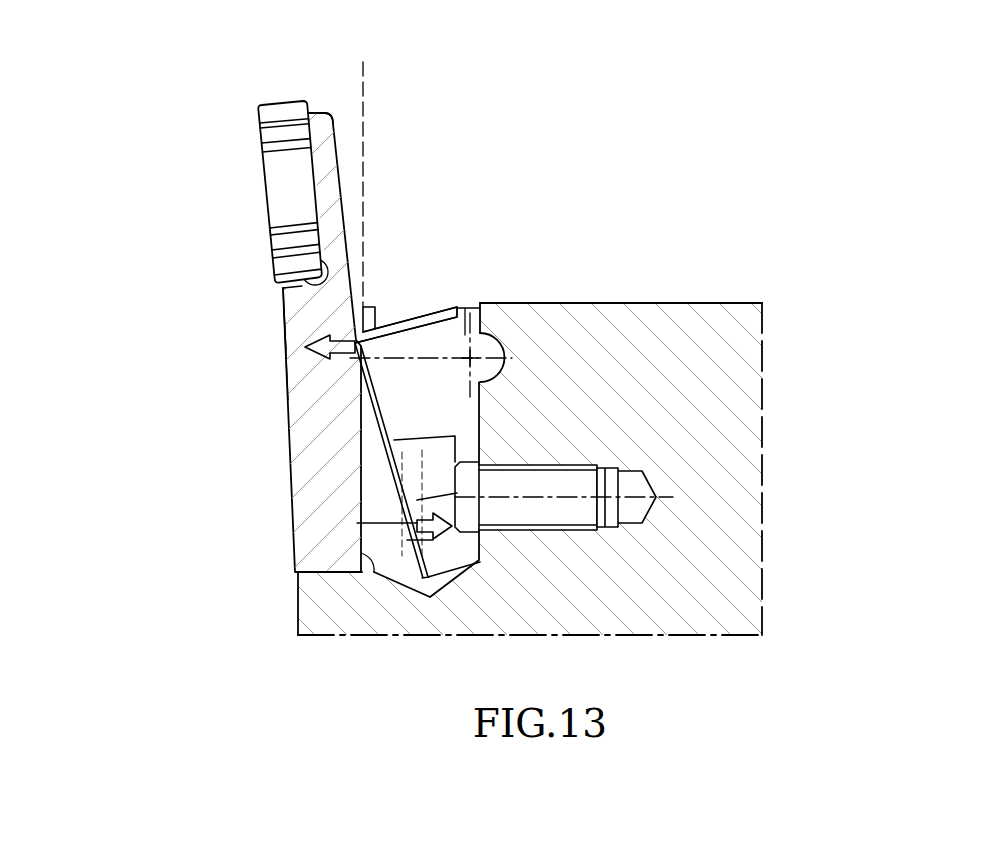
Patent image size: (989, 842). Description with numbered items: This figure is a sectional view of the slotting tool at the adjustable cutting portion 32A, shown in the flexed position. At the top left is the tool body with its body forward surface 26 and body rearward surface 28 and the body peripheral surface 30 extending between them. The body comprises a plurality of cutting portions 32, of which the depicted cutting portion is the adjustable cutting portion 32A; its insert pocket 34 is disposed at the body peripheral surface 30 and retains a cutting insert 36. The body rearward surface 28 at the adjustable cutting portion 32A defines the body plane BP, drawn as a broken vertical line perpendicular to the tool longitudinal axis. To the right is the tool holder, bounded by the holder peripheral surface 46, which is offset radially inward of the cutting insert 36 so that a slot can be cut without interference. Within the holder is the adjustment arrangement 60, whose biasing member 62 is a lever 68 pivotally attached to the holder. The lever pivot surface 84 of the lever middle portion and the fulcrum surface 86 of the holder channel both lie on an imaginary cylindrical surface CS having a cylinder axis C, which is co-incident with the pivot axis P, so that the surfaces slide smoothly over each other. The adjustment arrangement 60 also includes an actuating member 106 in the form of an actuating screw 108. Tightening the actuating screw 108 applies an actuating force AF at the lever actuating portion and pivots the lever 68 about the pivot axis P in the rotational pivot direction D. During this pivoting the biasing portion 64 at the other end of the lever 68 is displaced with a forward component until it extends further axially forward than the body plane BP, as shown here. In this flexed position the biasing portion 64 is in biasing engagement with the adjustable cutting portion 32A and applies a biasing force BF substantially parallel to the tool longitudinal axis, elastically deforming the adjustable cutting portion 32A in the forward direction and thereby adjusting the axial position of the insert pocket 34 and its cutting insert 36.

The body rearward surface 28 is at (341, 190).
The body peripheral surface 30 is at (313, 110).
The cutting portion 32 is at (223, 212).
The adjustable cutting portion 32A is at (327, 393).
The insert pocket 34 is at (250, 255).
The cutting insert 36 is at (272, 175).
The body forward surface 26 is at (284, 330).
The holder peripheral surface 46 is at (703, 302).
The adjustment arrangement 60 is at (455, 283).
The biasing member 62 is at (388, 342).
The biasing portion 64 is at (352, 342).
The lever 68 is at (396, 404).
The lever pivot surface 84 is at (496, 375).
The fulcrum surface 86 is at (480, 330).
The actuating member 106 is at (622, 578).
The actuating screw 108 is at (626, 497).
The body plane BP is at (366, 169).
The imaginary cylindrical surface CS is at (512, 380).
The cylinder axis C is at (470, 357).
The pivot axis P is at (470, 358).
The rotational pivot direction D is at (450, 397).
The biasing force BF is at (314, 352).
The actuating force AF is at (430, 573).